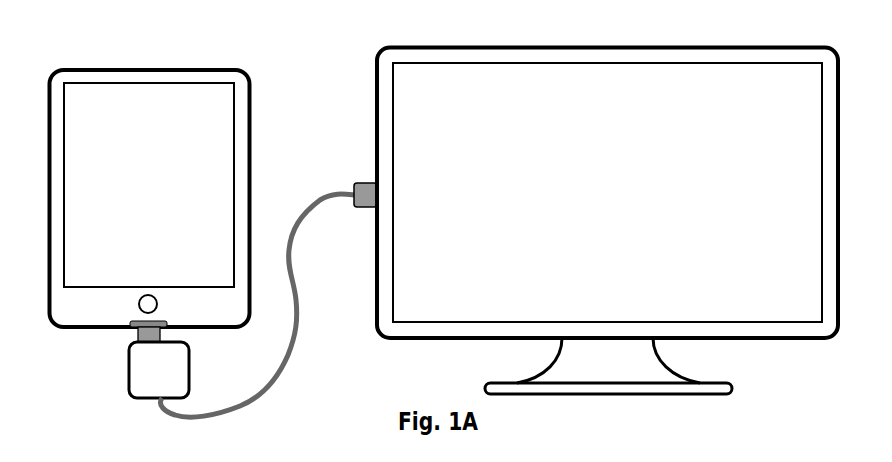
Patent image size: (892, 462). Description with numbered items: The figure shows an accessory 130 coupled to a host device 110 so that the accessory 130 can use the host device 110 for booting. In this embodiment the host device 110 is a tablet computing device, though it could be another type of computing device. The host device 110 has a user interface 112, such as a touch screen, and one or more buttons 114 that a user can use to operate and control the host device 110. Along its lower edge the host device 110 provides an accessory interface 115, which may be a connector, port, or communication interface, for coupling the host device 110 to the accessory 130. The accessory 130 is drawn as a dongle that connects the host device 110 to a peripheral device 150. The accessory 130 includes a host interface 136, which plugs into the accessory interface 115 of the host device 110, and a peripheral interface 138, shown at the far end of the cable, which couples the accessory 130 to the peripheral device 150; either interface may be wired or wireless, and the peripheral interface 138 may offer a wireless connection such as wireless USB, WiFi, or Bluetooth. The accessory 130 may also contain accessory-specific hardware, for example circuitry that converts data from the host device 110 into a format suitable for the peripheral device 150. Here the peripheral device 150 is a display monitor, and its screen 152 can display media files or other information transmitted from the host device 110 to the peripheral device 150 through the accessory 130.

The host device 110 is at (158, 67).
The user interface 112 is at (205, 99).
The button 114 is at (155, 295).
The accessory interface 115 is at (133, 321).
The accessory 130 is at (128, 368).
The host interface 136 is at (138, 335).
The peripheral interface 138 is at (363, 208).
The peripheral device 150 is at (377, 67).
The screen 152 is at (650, 82).